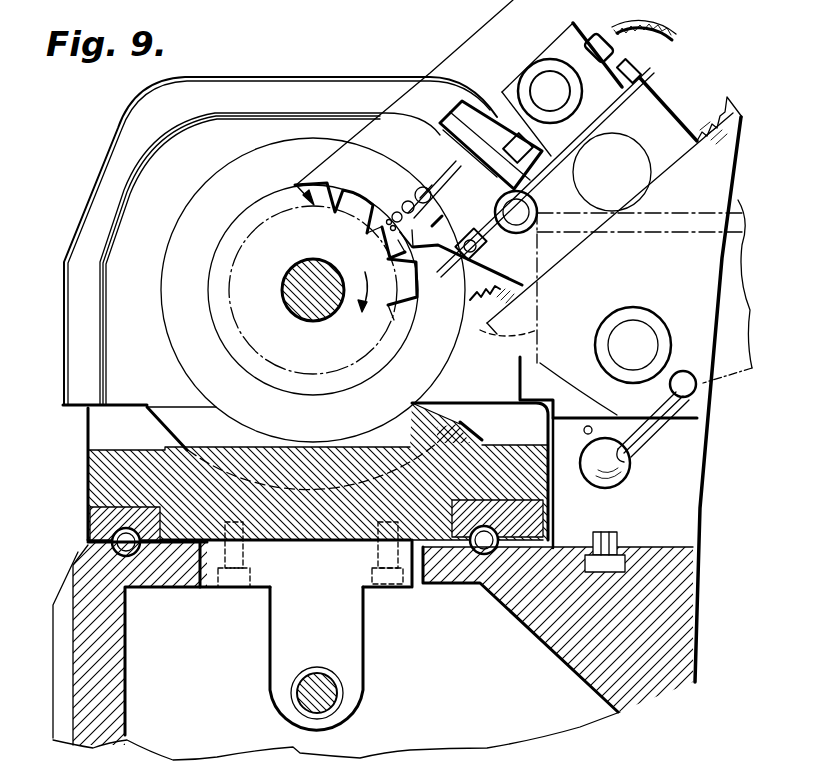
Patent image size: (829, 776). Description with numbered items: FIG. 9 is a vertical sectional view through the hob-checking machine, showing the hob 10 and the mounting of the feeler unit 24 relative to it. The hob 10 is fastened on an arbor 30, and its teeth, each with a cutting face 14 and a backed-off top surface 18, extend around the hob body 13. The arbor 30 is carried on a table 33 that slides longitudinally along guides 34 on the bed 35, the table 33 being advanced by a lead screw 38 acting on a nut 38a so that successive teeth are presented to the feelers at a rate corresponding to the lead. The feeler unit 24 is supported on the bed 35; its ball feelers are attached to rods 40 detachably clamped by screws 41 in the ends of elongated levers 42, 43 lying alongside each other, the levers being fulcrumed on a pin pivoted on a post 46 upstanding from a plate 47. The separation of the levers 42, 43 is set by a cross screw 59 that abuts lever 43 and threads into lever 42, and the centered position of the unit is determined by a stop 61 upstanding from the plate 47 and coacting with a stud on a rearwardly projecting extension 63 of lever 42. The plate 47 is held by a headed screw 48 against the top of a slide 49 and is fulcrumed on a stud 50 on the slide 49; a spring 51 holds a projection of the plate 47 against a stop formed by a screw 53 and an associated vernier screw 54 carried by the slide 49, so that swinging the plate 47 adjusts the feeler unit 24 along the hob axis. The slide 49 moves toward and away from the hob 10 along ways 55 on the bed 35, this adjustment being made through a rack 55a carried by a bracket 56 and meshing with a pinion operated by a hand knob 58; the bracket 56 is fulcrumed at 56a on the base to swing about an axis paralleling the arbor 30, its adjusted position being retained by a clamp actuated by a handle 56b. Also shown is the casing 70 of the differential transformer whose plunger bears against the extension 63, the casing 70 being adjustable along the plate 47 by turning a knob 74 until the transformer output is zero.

The hob 10 is at (426, 292).
The hob body 13 is at (317, 346).
The cutting face 14 is at (413, 257).
The top surface 18 is at (356, 188).
The feeler unit 24 is at (397, 228).
The arbor 30 is at (295, 308).
The table 33 is at (88, 458).
The guides 34 is at (113, 536).
The bed 35 is at (125, 630).
The lead screw 38 is at (330, 683).
The nut 38a is at (365, 641).
The rods 40 is at (392, 212).
The screws 41 is at (407, 201).
The lever 42 is at (440, 190).
The lever 43 is at (423, 187).
The post 46 is at (468, 135).
The plate 47 is at (648, 79).
The headed screw 48 is at (450, 216).
The slide 49 is at (491, 294).
The stud 50 is at (634, 68).
The spring 51 is at (485, 247).
The screw 53 is at (540, 210).
The vernier screw 54 is at (540, 227).
The ways 55 is at (492, 338).
The rack 55a is at (488, 323).
The bracket 56 is at (527, 384).
The fulcrum 56a is at (633, 344).
The handle 56b is at (632, 470).
The hand knob 58 is at (632, 143).
The cross screw 59 is at (423, 187).
The stop 61 is at (514, 140).
The extension 63 is at (485, 143).
The casing 70 is at (578, 34).
The knob 74 is at (580, 90).